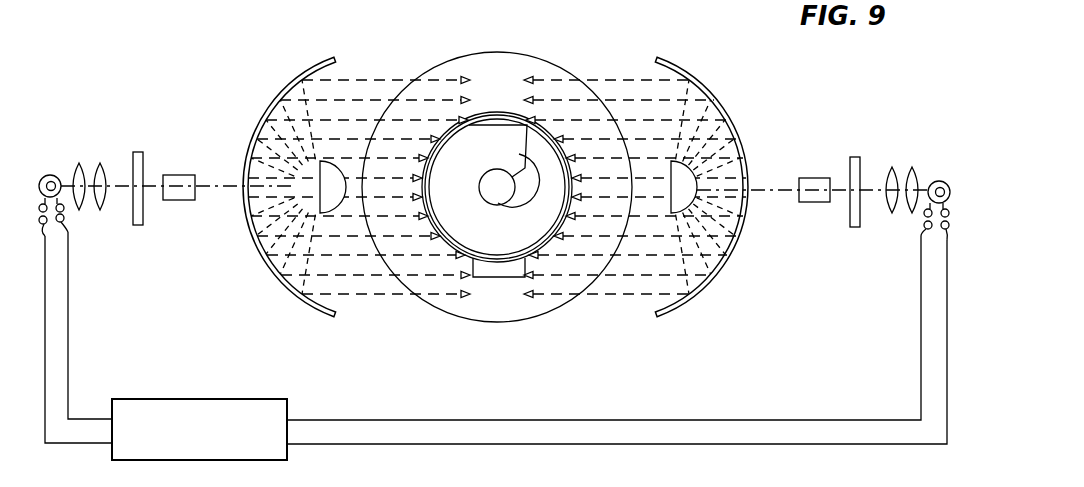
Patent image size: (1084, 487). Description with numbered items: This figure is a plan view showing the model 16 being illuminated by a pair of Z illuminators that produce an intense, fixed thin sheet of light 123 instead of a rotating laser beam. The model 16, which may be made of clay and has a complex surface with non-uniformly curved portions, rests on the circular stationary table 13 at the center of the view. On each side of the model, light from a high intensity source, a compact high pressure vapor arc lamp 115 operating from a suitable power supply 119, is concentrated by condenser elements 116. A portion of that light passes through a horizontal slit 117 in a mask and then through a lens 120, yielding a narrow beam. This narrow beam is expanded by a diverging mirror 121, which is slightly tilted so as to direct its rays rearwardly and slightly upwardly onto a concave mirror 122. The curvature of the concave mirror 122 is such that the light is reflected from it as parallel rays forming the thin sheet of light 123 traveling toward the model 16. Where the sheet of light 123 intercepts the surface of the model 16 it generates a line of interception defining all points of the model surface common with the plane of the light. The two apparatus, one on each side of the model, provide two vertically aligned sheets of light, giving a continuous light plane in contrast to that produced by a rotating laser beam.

The circular stationary table 13 is at (520, 66).
The model 16 is at (480, 268).
The high pressure vapor arc lamp 115 is at (52, 175).
The condenser elements 116 is at (80, 163).
The horizontal slit 117 is at (141, 153).
The power supply 119 is at (272, 410).
The lens 120 is at (186, 176).
The diverging mirror 121 is at (321, 173).
The concave mirror 122 is at (293, 290).
The sheet of light 123 is at (342, 309).